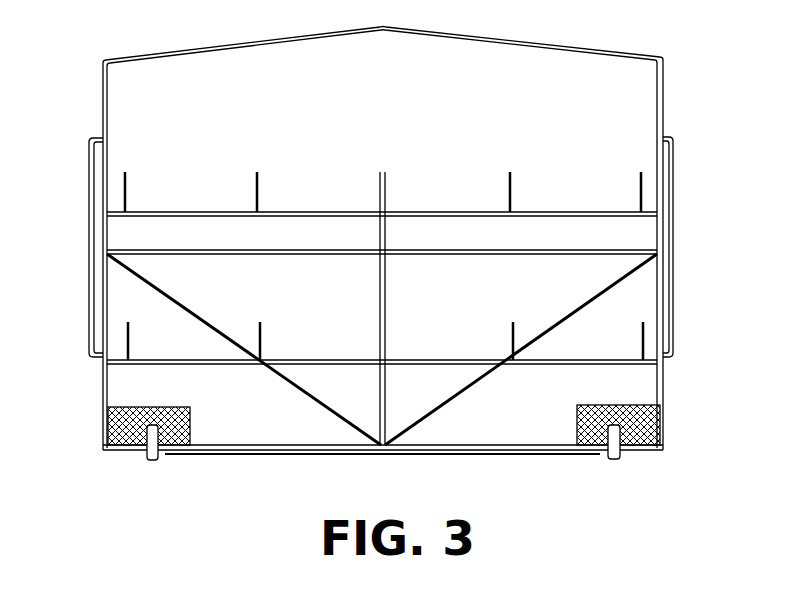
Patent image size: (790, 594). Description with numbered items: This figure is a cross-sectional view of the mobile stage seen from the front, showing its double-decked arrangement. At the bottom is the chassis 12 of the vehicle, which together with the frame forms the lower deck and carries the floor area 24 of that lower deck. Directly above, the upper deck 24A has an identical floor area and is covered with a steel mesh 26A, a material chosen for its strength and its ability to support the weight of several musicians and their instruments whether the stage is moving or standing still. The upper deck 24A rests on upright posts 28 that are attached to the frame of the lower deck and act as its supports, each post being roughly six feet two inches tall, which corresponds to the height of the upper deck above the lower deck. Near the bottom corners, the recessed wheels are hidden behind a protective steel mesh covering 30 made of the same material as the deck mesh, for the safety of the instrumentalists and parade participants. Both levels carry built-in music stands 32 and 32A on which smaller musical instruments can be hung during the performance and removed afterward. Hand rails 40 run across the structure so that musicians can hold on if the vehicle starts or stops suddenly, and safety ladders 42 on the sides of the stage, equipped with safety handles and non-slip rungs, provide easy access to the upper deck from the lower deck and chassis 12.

The chassis 12 is at (570, 457).
The floor area of the lower deck 24 is at (243, 445).
The upper deck 24A is at (167, 258).
The steel mesh 26A is at (197, 250).
The upright posts 28 is at (385, 290).
The protective steel mesh covering 30 is at (120, 443).
The music stands 32 is at (128, 330).
The music stands 32A is at (125, 178).
The hand rails 40 is at (390, 212).
The safety ladders 42 is at (92, 234).